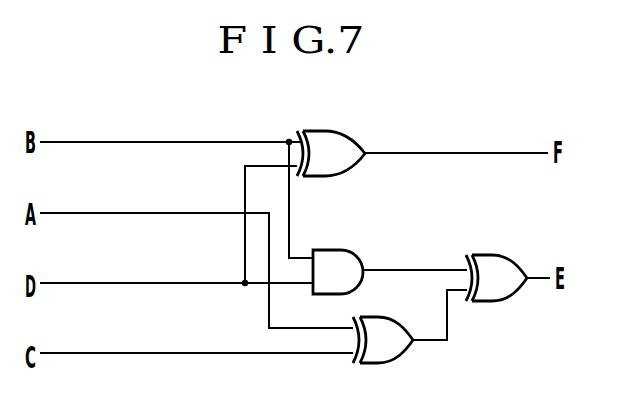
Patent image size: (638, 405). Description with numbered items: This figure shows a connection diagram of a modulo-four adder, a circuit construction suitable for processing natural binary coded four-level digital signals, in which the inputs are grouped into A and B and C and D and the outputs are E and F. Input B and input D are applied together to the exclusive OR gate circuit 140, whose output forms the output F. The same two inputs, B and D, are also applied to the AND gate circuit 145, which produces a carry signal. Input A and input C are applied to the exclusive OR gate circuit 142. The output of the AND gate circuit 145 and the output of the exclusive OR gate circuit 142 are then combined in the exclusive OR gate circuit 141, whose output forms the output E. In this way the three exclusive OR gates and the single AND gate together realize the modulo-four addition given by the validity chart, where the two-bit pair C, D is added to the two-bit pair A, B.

The exclusive OR gate circuit 140 is at (331, 153).
The AND gate circuit 145 is at (338, 272).
The exclusive OR gate circuit 141 is at (496, 278).
The exclusive OR gate circuit 142 is at (383, 340).